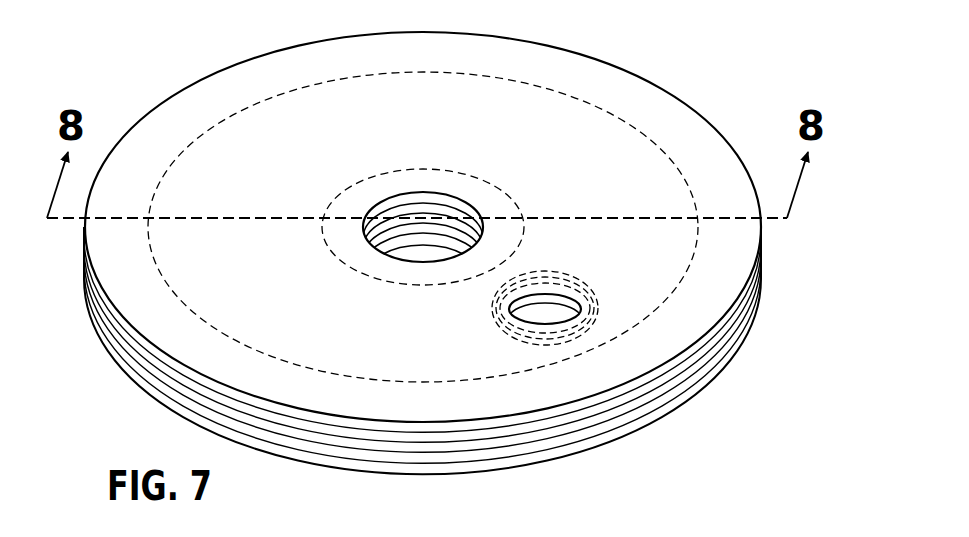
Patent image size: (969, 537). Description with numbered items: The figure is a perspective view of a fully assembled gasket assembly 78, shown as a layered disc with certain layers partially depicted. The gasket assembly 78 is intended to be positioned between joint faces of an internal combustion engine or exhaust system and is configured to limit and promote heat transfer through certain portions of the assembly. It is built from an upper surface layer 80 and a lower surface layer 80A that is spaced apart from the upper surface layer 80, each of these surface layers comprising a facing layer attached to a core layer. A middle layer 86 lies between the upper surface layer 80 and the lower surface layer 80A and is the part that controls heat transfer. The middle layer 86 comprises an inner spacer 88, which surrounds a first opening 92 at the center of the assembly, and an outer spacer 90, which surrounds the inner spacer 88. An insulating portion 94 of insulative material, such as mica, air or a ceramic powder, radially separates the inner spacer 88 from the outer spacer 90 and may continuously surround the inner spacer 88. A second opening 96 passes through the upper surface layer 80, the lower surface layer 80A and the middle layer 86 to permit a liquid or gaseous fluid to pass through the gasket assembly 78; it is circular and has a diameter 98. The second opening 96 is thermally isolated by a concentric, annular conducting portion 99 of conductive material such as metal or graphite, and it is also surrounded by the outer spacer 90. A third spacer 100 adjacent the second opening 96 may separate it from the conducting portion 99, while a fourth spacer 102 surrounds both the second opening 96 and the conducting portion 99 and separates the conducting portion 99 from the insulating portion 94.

The gasket assembly 78 is at (170, 83).
The upper surface layer 80 is at (727, 325).
The lower surface layer 80A is at (717, 358).
The middle layer 86 is at (216, 303).
The inner spacer 88 is at (345, 238).
The outer spacer 90 is at (290, 378).
The first opening 92 is at (425, 208).
The insulating portion 94 is at (401, 360).
The second opening 96 is at (527, 321).
The diameter 98 is at (527, 298).
The conducting portion 99 is at (588, 298).
The third spacer 100 is at (507, 307).
The fourth spacer 102 is at (515, 335).